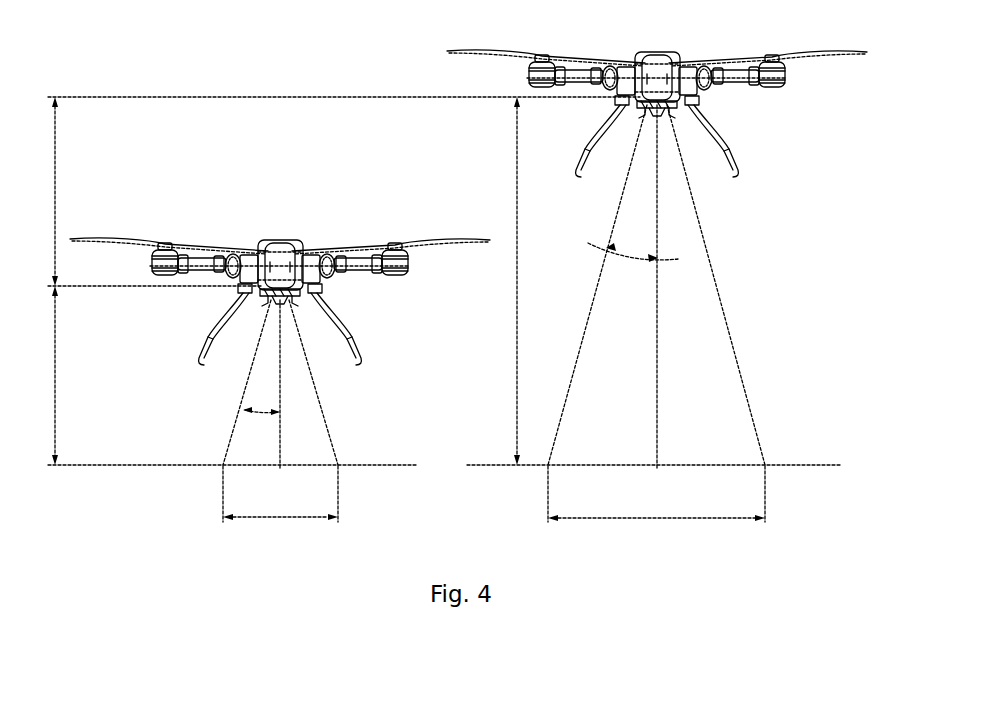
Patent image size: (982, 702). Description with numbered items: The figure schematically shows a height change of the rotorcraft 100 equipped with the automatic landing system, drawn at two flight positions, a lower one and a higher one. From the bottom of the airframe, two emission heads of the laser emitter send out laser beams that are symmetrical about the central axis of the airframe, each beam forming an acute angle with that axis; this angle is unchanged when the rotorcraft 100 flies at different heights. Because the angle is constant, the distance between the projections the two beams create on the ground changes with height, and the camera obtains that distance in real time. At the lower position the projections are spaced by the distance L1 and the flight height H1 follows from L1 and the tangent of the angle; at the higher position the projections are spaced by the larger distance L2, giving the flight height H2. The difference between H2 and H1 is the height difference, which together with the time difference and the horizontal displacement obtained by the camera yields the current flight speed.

The rotorcraft 100 is at (281, 240).
The flight height H1 is at (57, 375).
The flight height H2 is at (518, 281).
The distance between projections L1 is at (280, 494).
The distance between projections L2 is at (656, 494).